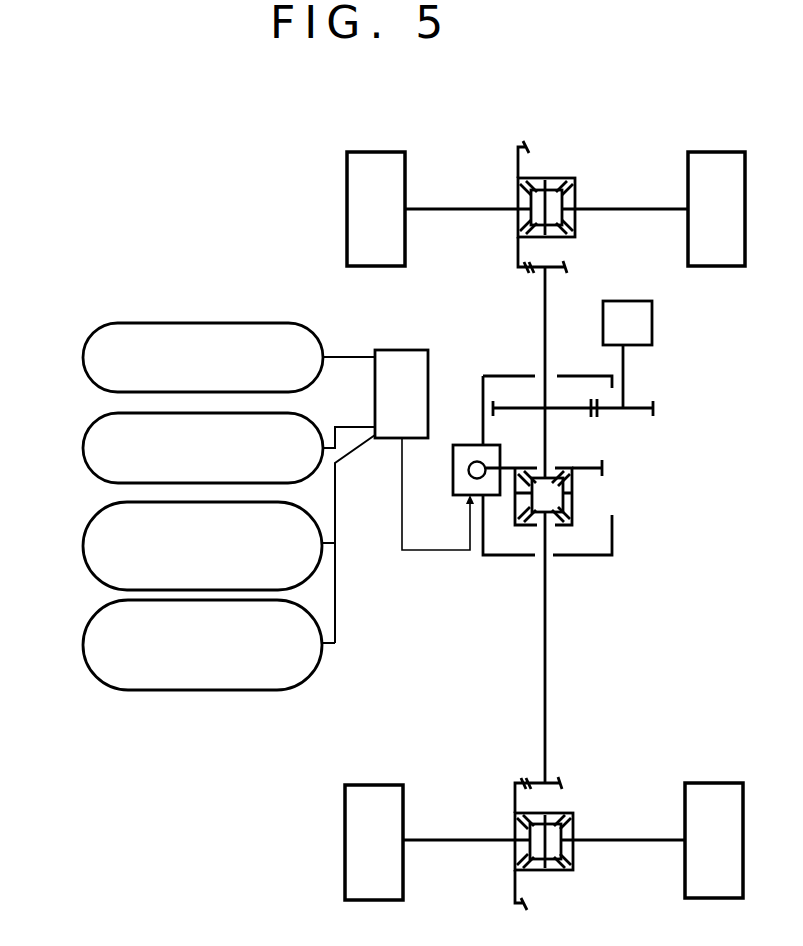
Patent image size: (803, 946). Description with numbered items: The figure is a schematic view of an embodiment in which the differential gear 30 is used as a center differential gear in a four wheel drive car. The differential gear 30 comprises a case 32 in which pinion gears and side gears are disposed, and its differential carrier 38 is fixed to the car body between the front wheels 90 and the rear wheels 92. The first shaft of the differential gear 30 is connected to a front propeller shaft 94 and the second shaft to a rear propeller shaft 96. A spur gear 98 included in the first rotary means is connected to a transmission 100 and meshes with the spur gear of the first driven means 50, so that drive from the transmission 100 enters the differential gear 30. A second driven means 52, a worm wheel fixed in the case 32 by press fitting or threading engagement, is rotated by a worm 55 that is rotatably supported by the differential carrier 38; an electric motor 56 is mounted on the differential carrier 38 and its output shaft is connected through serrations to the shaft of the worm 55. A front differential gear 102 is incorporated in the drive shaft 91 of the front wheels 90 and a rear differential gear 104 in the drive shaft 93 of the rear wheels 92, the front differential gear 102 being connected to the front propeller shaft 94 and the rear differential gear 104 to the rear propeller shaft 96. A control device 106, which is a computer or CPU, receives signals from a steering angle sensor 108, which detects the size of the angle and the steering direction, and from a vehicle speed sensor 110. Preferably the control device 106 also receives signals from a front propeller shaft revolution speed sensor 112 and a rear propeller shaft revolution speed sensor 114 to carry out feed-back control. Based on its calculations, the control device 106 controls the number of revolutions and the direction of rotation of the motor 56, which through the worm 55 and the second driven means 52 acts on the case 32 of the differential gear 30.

The differential gear 30 is at (585, 484).
The case 32 is at (583, 517).
The differential carrier 38 is at (612, 547).
The first driven means 50 is at (565, 408).
The second driven means 52 is at (606, 463).
The worm 55 is at (468, 471).
The electric motor 56 is at (460, 500).
The front wheels 90 is at (722, 152).
The drive shaft 91 is at (460, 209).
The rear wheels 92 is at (713, 783).
The drive shaft 93 is at (633, 840).
The front propeller shaft 94 is at (545, 310).
The rear propeller shaft 96 is at (548, 657).
The spur gear 98 is at (656, 408).
The transmission 100 is at (653, 324).
The front differential gear 102 is at (575, 180).
The rear differential gear 104 is at (573, 870).
The control device 106 is at (410, 350).
The steering angle sensor 108 is at (83, 357).
The vehicle speed sensor 110 is at (83, 440).
The front propeller shaft revolution speed sensor 112 is at (84, 535).
The rear propeller shaft revolution speed sensor 114 is at (84, 635).